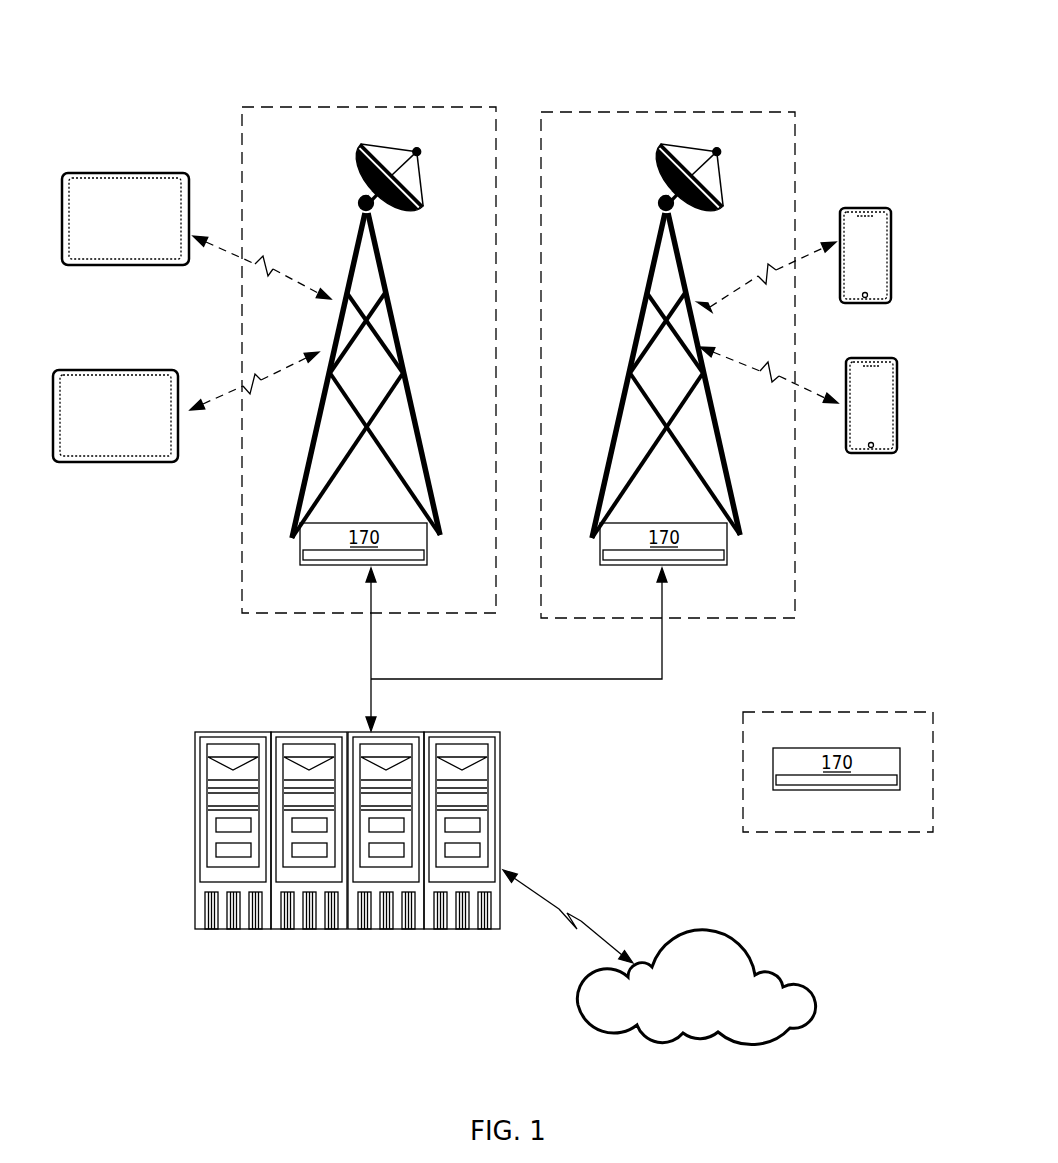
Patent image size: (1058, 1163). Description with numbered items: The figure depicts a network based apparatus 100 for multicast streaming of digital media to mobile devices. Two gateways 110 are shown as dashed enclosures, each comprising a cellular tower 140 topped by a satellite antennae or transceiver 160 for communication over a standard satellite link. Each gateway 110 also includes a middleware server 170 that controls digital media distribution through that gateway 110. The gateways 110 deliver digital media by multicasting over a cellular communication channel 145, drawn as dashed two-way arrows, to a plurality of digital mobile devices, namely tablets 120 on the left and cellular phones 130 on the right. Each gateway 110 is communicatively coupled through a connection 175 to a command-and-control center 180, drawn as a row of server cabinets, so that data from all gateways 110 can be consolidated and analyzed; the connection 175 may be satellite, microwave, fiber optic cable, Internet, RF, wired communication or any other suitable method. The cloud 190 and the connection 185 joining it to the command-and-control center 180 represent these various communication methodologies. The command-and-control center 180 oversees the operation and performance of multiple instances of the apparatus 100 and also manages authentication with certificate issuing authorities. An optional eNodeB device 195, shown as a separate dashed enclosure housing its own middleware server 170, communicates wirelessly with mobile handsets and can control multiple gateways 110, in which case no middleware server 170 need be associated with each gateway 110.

The network based apparatus 100 is at (229, 50).
The gateway 110 is at (423, 110).
The tablet 120 is at (132, 177).
The cellular phone 130 is at (863, 210).
The cellular tower 140 is at (385, 292).
The cellular communication channel 145 is at (263, 260).
The satellite antennae or transceiver 160 is at (360, 148).
The middleware server 170 is at (600, 656).
The connection 175 is at (532, 678).
The command-and-control center 180 is at (263, 730).
The connection 185 is at (565, 905).
The cloud 190 is at (735, 940).
The eNodeB device 195 is at (846, 717).